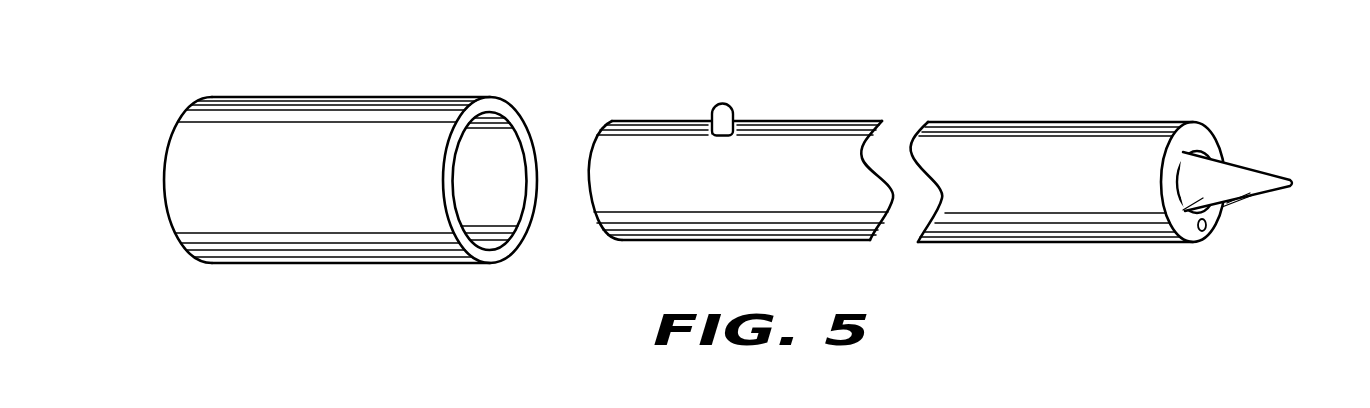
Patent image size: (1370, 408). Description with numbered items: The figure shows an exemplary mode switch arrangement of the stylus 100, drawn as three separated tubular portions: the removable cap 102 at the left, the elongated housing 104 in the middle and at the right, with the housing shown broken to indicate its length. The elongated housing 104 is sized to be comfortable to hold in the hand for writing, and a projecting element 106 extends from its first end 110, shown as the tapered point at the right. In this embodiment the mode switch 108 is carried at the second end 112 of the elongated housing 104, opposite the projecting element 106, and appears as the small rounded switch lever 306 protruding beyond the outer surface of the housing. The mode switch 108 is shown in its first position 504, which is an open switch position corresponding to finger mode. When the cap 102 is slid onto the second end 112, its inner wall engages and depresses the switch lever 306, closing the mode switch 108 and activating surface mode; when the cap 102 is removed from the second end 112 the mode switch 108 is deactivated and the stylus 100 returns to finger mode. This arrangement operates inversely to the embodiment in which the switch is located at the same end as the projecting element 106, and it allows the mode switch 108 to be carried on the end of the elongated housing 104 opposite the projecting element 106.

The stylus 100 is at (990, 89).
The cap 102 is at (367, 95).
The elongated housing 104 is at (967, 243).
The projecting element 106 is at (1243, 173).
The mode switch 108 is at (723, 102).
The first end 110 is at (1118, 122).
The second end 112 is at (654, 225).
The switch lever 306 is at (710, 119).
The first position 504 is at (746, 111).